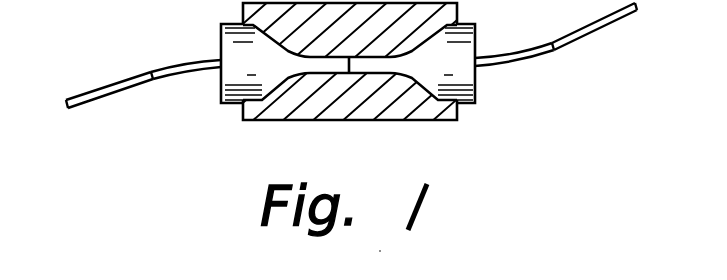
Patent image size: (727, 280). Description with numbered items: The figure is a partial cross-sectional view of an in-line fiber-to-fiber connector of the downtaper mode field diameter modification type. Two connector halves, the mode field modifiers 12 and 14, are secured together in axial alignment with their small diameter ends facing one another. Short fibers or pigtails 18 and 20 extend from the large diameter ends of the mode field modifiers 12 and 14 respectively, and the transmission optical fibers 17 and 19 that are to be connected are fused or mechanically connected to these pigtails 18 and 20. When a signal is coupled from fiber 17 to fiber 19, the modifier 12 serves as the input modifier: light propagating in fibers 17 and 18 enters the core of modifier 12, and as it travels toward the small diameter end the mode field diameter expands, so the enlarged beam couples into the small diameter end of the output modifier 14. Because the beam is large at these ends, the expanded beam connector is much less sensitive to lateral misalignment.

The mode field modifier 12 is at (233, 67).
The mode field modifier 14 is at (453, 65).
The transmission optical fiber 17 is at (120, 82).
The pigtail 18 is at (177, 65).
The transmission optical fiber 19 is at (607, 25).
The pigtail 20 is at (517, 52).